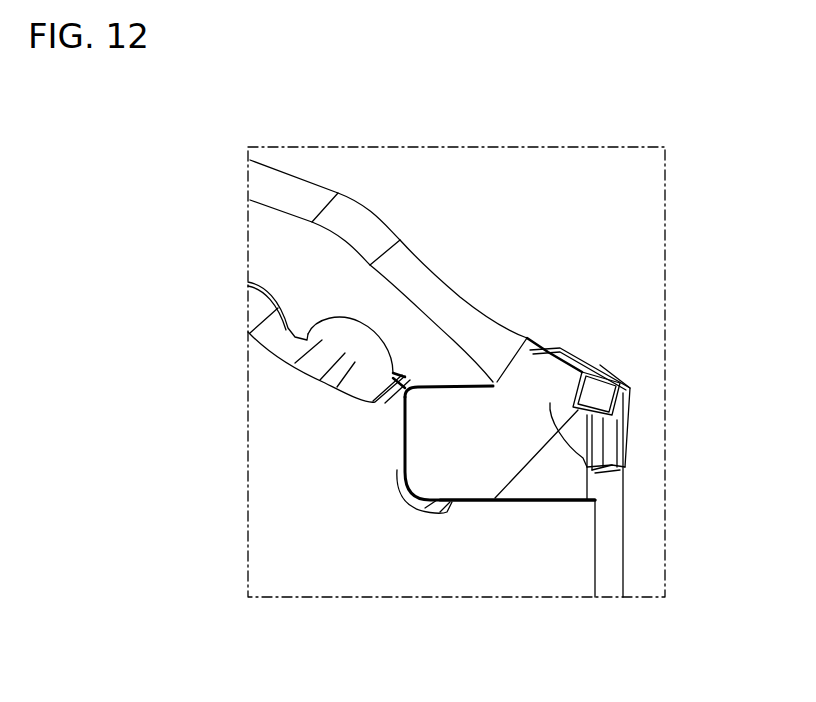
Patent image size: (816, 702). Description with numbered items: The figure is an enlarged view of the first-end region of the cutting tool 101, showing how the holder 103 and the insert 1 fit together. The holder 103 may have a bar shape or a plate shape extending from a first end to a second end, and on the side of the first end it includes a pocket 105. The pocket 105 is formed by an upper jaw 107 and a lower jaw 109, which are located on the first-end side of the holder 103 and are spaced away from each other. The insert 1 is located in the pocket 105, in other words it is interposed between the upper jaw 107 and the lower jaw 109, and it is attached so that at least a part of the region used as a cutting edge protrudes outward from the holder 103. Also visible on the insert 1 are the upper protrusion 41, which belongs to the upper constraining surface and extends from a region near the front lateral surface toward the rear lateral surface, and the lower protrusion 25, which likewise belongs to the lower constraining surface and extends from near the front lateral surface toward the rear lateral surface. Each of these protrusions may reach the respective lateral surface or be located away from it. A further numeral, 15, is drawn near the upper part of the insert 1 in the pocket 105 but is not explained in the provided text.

The cutting tool 101 is at (445, 119).
The upper jaw 107 is at (455, 318).
The insert 1 is at (502, 418).
The pocket 105 is at (603, 380).
The connector rim 15 is at (637, 400).
The upper protrusion 41 is at (460, 380).
The holder 103 is at (274, 453).
The lower protrusion 25 is at (570, 502).
The lower jaw 109 is at (522, 563).